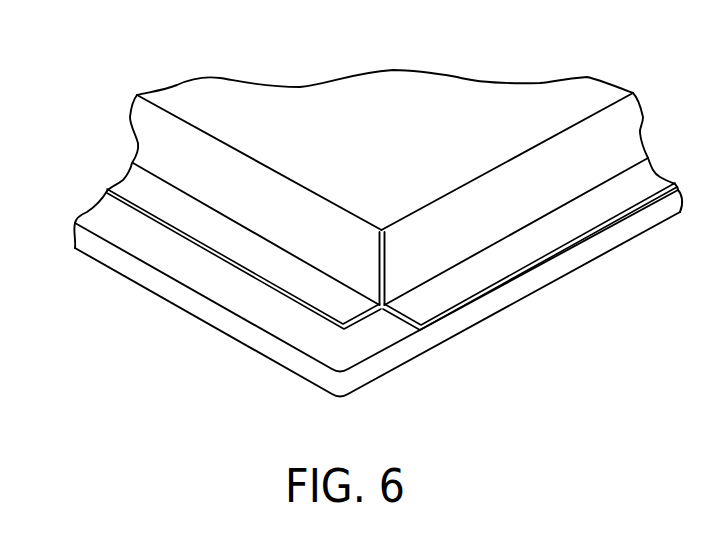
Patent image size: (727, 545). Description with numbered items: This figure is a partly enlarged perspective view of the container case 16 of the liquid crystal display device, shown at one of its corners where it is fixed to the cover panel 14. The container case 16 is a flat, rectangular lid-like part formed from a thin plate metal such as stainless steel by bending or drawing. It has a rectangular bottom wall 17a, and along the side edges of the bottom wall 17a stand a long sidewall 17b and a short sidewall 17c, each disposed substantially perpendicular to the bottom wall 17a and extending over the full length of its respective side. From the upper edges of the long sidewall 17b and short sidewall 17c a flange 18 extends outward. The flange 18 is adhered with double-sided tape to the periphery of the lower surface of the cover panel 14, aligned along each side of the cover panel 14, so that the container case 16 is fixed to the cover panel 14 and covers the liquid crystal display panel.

The cover panel 14 is at (313, 340).
The container case 16 is at (369, 157).
The bottom wall 17a is at (403, 92).
The long sidewall 17b is at (543, 193).
The short sidewall 17c is at (155, 141).
The flange 18 is at (205, 232).